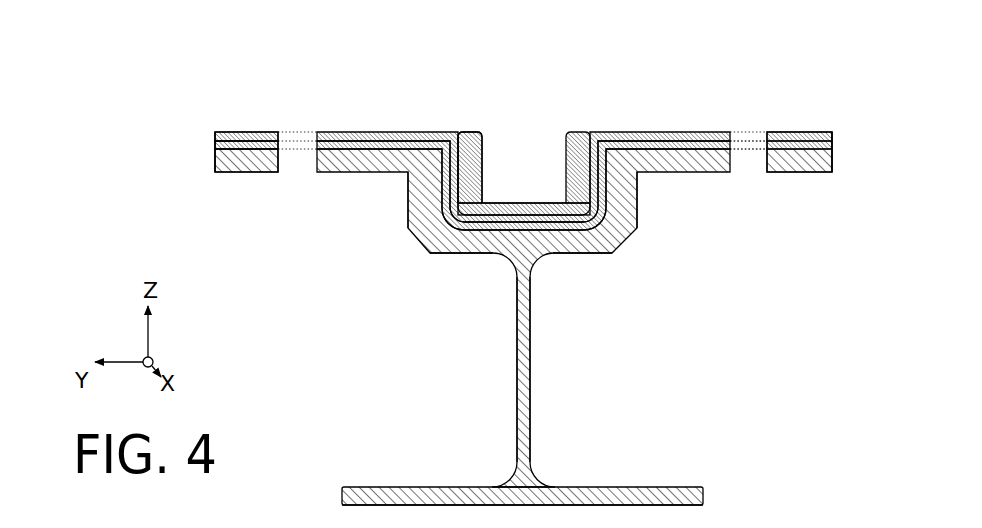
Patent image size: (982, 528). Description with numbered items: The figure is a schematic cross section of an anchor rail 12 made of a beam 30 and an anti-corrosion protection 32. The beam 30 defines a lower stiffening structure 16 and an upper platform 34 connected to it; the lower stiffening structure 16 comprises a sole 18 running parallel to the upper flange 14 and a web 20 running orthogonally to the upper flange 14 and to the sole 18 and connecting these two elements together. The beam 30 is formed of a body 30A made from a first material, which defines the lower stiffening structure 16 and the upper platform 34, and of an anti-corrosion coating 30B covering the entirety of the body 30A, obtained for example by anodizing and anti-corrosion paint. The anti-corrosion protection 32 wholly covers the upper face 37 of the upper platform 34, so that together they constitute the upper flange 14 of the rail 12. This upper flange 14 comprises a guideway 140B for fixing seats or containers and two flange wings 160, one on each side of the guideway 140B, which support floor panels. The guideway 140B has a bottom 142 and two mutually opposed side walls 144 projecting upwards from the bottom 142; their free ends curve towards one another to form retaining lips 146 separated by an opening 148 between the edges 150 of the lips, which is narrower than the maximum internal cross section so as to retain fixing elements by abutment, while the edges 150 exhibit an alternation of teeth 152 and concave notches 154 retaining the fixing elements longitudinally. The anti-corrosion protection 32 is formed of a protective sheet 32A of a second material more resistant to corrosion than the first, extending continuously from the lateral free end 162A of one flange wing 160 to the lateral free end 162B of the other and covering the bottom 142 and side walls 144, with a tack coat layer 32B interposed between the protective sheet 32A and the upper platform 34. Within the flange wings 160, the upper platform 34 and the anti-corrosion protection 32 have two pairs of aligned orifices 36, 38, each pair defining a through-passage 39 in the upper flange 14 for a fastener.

The rail 12 is at (313, 428).
The upper flange 14 is at (73, 118).
The lower stiffening structure 16 is at (411, 402).
The sole 18 is at (463, 487).
The web 20 is at (516, 400).
The beam 30 is at (685, 413).
The body 30A is at (596, 487).
The anti-corrosion coating 30B is at (667, 487).
The anti-corrosion protection 32 is at (121, 108).
The protective sheet 32A is at (215, 137).
The tack coat layer 32B is at (215, 147).
The upper platform 34 is at (215, 168).
The orifice 36 is at (312, 150).
The upper face 37 is at (692, 133).
The orifice 38 is at (307, 150).
The through-passage 39 is at (297, 138).
The guideway 140B is at (626, 247).
The bottom 142 is at (493, 212).
The side walls 144 is at (408, 192).
The retaining lips 146 is at (475, 255).
The opening 148 is at (522, 177).
The edges 150 is at (478, 140).
The teeth 152 is at (577, 148).
The concave notches 154 is at (480, 141).
The flange wings 160 is at (250, 132).
The lateral free end 162A is at (215, 160).
The lateral free end 162B is at (858, 130).